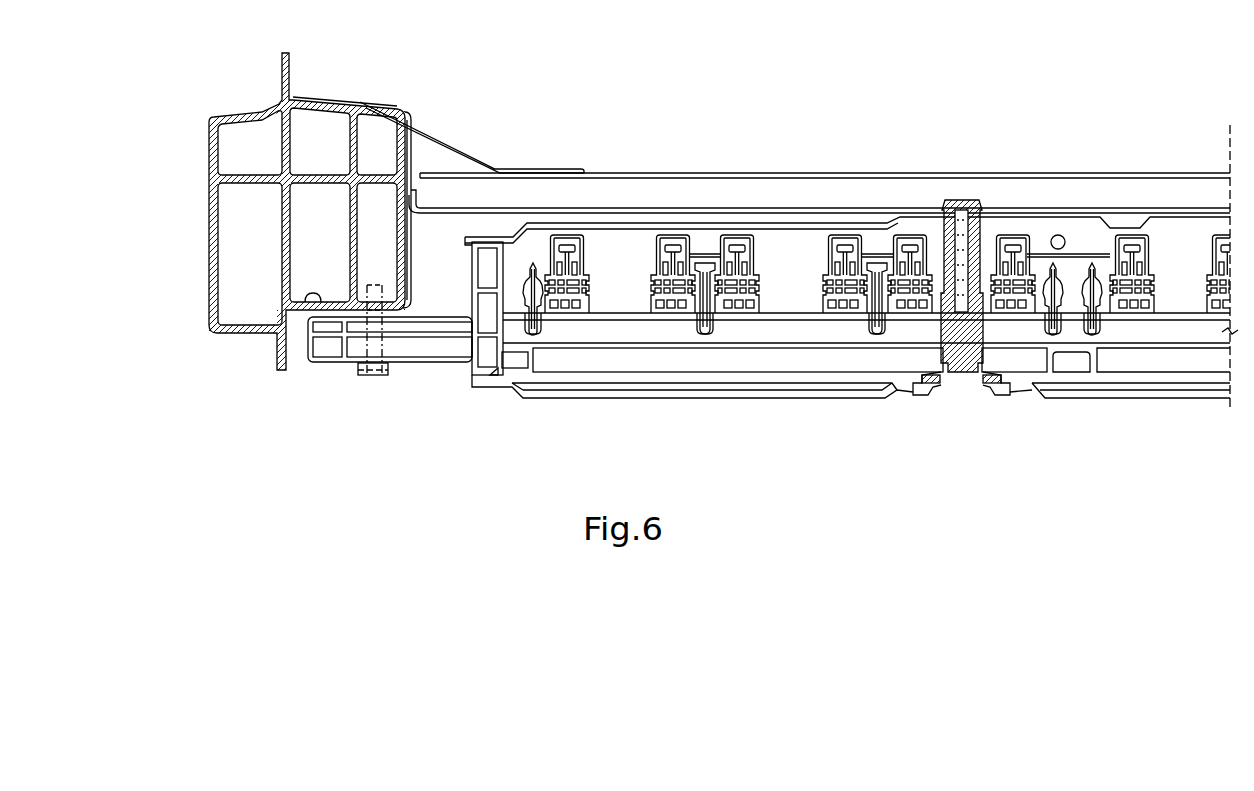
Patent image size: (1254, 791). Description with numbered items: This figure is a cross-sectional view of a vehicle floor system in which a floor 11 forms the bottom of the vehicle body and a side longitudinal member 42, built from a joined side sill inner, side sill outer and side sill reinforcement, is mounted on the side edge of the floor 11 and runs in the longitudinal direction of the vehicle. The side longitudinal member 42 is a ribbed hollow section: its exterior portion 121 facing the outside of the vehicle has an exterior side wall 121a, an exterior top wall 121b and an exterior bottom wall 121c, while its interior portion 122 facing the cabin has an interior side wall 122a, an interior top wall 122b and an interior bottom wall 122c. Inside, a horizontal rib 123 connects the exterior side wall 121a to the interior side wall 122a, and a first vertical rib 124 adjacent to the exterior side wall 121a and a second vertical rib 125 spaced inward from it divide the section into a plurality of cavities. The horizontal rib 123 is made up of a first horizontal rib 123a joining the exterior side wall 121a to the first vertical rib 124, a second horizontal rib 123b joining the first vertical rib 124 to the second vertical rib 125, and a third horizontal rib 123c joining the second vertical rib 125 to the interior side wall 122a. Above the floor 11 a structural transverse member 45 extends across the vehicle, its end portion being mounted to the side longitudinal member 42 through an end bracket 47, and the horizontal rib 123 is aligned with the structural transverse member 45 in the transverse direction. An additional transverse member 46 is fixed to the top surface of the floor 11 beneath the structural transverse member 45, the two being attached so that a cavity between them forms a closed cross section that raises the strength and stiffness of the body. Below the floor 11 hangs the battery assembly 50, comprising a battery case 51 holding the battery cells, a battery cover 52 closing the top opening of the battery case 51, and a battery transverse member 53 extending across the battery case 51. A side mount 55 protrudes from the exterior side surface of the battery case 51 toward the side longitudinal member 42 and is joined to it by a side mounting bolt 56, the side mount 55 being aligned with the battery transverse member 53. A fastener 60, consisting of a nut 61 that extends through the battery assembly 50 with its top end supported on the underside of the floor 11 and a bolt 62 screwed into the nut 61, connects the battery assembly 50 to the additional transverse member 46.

The floor 11 is at (825, 195).
The side longitudinal member 42 is at (312, 221).
The structural transverse member 45 is at (727, 168).
The additional transverse member 46 is at (797, 203).
The end bracket 47 is at (478, 152).
The battery assembly 50 is at (779, 303).
The battery case 51 is at (636, 400).
The battery cover 52 is at (633, 227).
The battery transverse member 53 is at (787, 308).
The side mount 55 is at (438, 362).
The side mounting bolt 56 is at (381, 382).
The fastener 60 is at (954, 292).
The nut 61 is at (985, 378).
The bolt 62 is at (968, 200).
The exterior portion 121 is at (267, 221).
The exterior side wall 121a is at (210, 245).
The exterior top wall 121b is at (258, 109).
The exterior bottom wall 121c is at (236, 335).
The interior portion 122 is at (361, 182).
The interior side wall 122a is at (411, 290).
The interior top wall 122b is at (322, 102).
The interior bottom wall 122c is at (310, 297).
The horizontal rib 123 is at (311, 216).
The first horizontal rib 123a is at (259, 185).
The second horizontal rib 123b is at (317, 185).
The third horizontal rib 123c is at (379, 185).
The first vertical rib 124 is at (283, 268).
The second vertical rib 125 is at (352, 262).